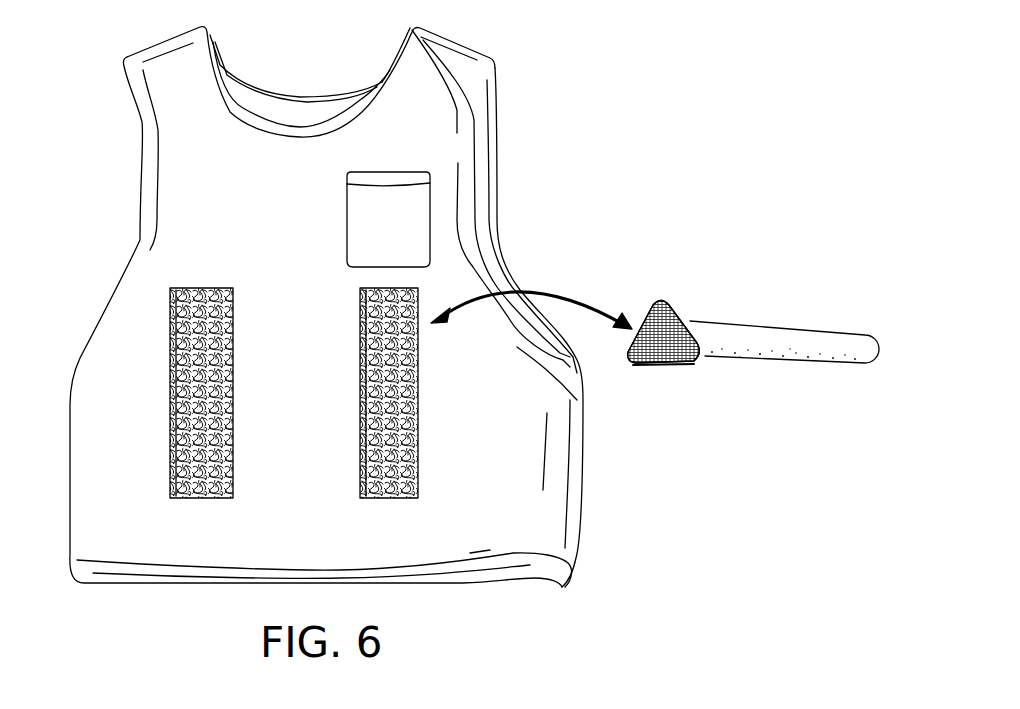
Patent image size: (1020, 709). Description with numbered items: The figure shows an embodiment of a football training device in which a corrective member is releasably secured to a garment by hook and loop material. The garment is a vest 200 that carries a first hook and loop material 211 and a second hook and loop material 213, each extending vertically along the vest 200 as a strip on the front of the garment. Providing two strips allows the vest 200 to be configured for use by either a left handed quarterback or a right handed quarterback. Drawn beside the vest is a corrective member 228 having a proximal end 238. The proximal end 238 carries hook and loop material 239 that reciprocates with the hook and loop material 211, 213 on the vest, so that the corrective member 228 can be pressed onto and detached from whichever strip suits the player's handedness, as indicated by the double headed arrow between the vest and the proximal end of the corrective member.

The vest 200 is at (552, 148).
The first hook and loop material 211 is at (418, 432).
The second hook and loop material 213 is at (233, 405).
The corrective member 228 is at (753, 356).
The proximal end 238 is at (667, 345).
The hook and loop material 239 is at (667, 332).